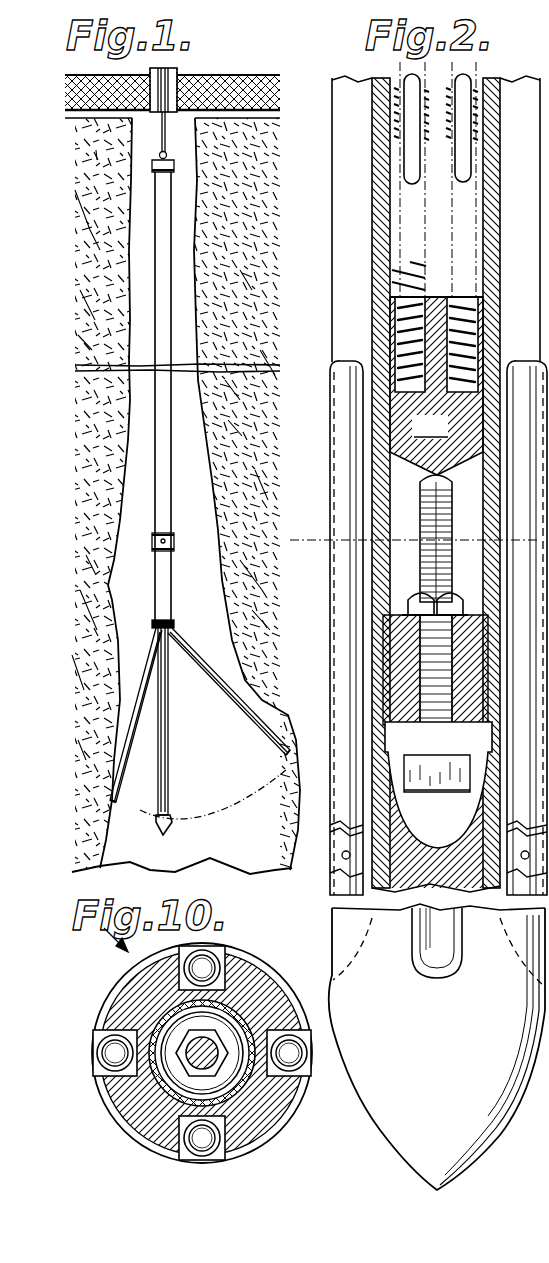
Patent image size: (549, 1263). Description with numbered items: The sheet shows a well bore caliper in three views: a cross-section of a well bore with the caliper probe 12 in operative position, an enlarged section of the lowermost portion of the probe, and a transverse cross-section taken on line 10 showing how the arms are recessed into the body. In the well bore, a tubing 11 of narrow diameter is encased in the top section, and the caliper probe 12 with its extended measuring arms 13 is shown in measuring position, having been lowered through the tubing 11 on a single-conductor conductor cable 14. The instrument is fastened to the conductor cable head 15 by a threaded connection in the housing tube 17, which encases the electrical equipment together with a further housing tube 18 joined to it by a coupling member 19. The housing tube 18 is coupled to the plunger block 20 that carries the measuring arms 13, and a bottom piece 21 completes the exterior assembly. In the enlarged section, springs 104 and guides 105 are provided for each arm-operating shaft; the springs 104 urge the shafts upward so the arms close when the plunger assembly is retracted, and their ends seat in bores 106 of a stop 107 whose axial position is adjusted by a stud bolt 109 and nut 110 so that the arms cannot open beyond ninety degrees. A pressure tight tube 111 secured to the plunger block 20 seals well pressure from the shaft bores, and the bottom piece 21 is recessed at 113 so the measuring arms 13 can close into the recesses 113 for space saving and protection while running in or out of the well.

In FIG. 2, the section line 10 is at (302, 540).
In FIG. 1, the tubing 11 is at (182, 72).
In FIG. 1, the caliper probe 12 is at (148, 433).
In FIG. 1, the measuring arms 13 is at (266, 748).
In FIG. 2, the measuring arms 13 is at (346, 427).
In FIG. 10, the measuring arms 13 is at (95, 1062).
In FIG. 1, the conductor cable 14 is at (160, 134).
In FIG. 1, the conductor cable head 15 is at (170, 155).
In FIG. 1, the housing tube 17 is at (155, 340).
In FIG. 1, the housing tube 18 is at (171, 582).
In FIG. 1, the coupling member 19 is at (152, 541).
In FIG. 1, the plunger block 20 is at (174, 632).
In FIG. 1, the bottom piece 21 is at (170, 830).
In FIG. 2, the bottom piece 21 is at (368, 1120).
In FIG. 10, the bottom piece 21 is at (140, 984).
In FIG. 2, the springs 104 is at (372, 88).
In FIG. 2, the guides 105 is at (400, 154).
In FIG. 2, the bores 106 is at (390, 340).
In FIG. 2, the stop 107 is at (436, 386).
In FIG. 10, the stud bolt 109 is at (212, 1040).
In FIG. 2, the nut 110 is at (540, 560).
In FIG. 10, the nut 110 is at (232, 1083).
In FIG. 2, the pressure tight tube 111 is at (372, 312).
In FIG. 10, the pressure tight tube 111 is at (168, 1095).
In FIG. 2, the recesses 113 is at (432, 955).
In FIG. 10, the recesses 113 is at (214, 958).